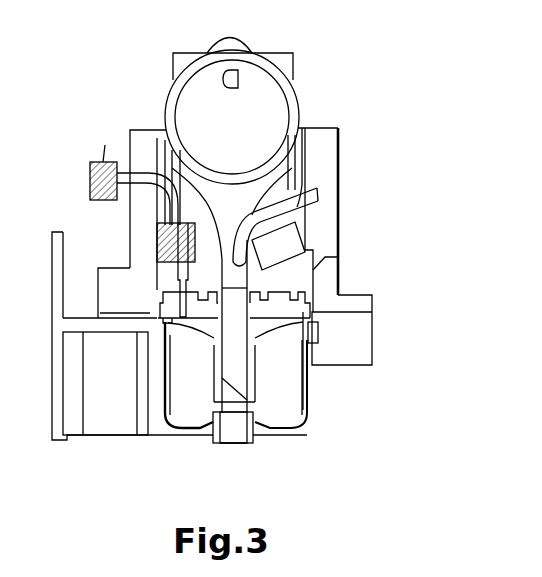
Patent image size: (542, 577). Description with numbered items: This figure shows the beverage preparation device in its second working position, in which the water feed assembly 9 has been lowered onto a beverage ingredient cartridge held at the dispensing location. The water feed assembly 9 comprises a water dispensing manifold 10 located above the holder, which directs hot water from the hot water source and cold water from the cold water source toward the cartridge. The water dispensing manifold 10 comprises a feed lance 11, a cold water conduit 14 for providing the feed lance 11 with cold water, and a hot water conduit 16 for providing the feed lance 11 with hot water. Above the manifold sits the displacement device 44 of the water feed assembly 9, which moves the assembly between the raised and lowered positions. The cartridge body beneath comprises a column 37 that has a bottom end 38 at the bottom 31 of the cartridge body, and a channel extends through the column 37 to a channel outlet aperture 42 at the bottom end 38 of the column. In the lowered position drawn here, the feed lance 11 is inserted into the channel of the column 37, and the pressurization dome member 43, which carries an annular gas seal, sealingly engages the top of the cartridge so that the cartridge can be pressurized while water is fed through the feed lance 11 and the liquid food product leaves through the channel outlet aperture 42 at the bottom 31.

The water feed assembly 9 is at (355, 125).
The water dispensing manifold 10 is at (221, 258).
The feed lance 11 is at (249, 355).
The cold water conduit 14 is at (253, 265).
The hot water conduit 16 is at (237, 254).
The bottom of cartridge body 31 is at (214, 452).
The column 37 is at (266, 377).
The bottom end of column 38 is at (267, 443).
The channel outlet aperture 42 is at (239, 450).
The dome member 43 is at (317, 305).
The displacement device 44 is at (305, 95).